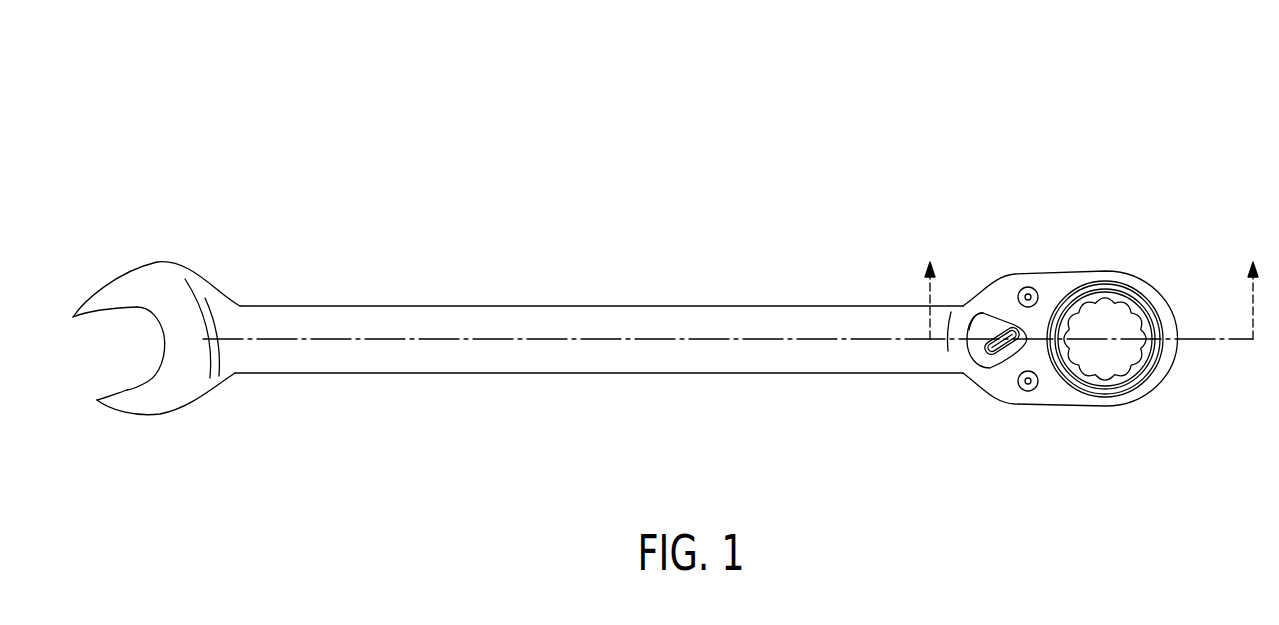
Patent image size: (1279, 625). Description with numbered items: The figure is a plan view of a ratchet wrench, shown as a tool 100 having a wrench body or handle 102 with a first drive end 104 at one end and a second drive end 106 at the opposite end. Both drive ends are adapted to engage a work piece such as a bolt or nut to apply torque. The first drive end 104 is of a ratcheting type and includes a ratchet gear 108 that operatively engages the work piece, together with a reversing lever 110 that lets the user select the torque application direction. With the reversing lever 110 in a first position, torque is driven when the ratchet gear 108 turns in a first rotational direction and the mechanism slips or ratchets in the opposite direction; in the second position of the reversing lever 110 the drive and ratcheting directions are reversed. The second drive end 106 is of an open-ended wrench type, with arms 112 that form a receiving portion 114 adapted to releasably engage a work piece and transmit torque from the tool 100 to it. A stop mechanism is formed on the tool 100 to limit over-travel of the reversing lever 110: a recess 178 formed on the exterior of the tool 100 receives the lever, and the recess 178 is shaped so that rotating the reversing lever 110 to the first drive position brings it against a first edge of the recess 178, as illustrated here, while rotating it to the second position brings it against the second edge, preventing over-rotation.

The tool 100 is at (772, 99).
The handle 102 is at (788, 305).
The first drive end 104 is at (1080, 272).
The second drive end 106 is at (182, 273).
The ratchet gear 108 is at (1123, 387).
The reversing lever 110 is at (987, 366).
The arms 112 is at (104, 282).
The receiving portion 114 is at (163, 357).
The recess 178 is at (985, 317).